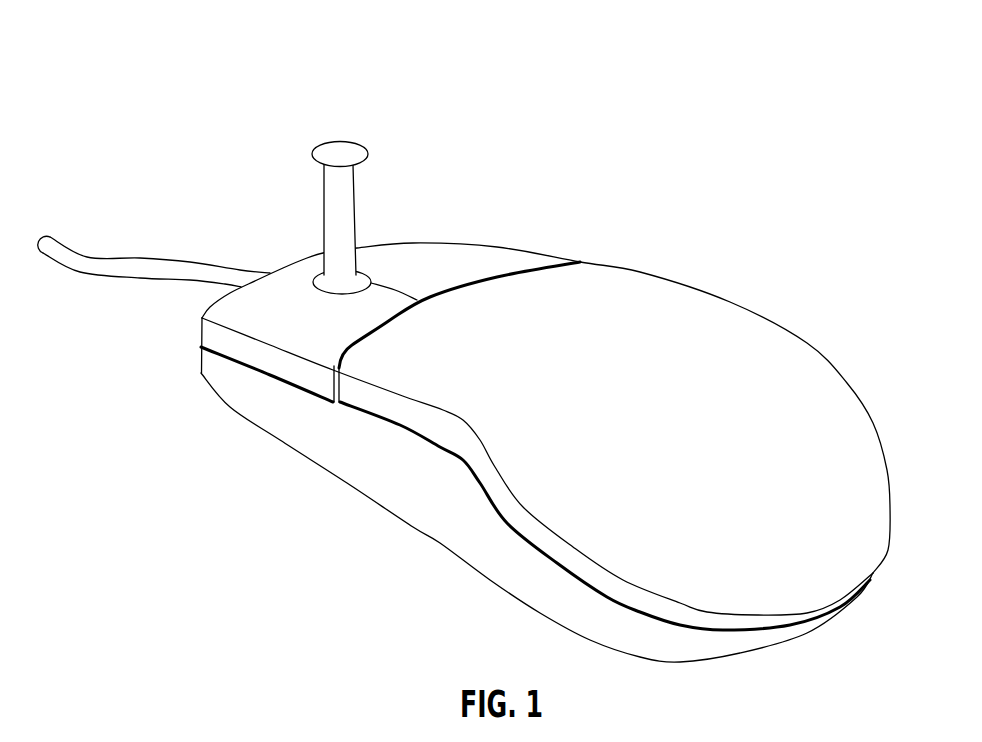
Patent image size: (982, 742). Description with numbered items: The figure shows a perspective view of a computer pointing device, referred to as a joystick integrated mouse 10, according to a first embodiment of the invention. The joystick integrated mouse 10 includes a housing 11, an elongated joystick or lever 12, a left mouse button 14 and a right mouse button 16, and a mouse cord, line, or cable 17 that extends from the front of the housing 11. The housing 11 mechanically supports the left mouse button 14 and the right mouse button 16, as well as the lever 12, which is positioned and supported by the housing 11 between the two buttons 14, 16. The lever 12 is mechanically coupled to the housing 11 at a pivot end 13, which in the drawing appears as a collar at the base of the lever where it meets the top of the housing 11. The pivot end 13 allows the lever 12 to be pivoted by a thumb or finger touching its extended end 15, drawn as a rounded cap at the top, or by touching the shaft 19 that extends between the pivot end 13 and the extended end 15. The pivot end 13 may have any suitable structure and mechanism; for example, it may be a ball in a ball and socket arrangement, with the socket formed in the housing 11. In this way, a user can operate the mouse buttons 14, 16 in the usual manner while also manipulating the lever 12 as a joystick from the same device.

The joystick integrated mouse 10 is at (464, 341).
The housing 11 is at (698, 323).
The lever 12 is at (339, 196).
The pivot end 13 is at (335, 280).
The left mouse button 14 is at (248, 325).
The extended end 15 is at (335, 153).
The right mouse button 16 is at (447, 252).
The cable 17 is at (167, 260).
The shaft 19 is at (335, 222).